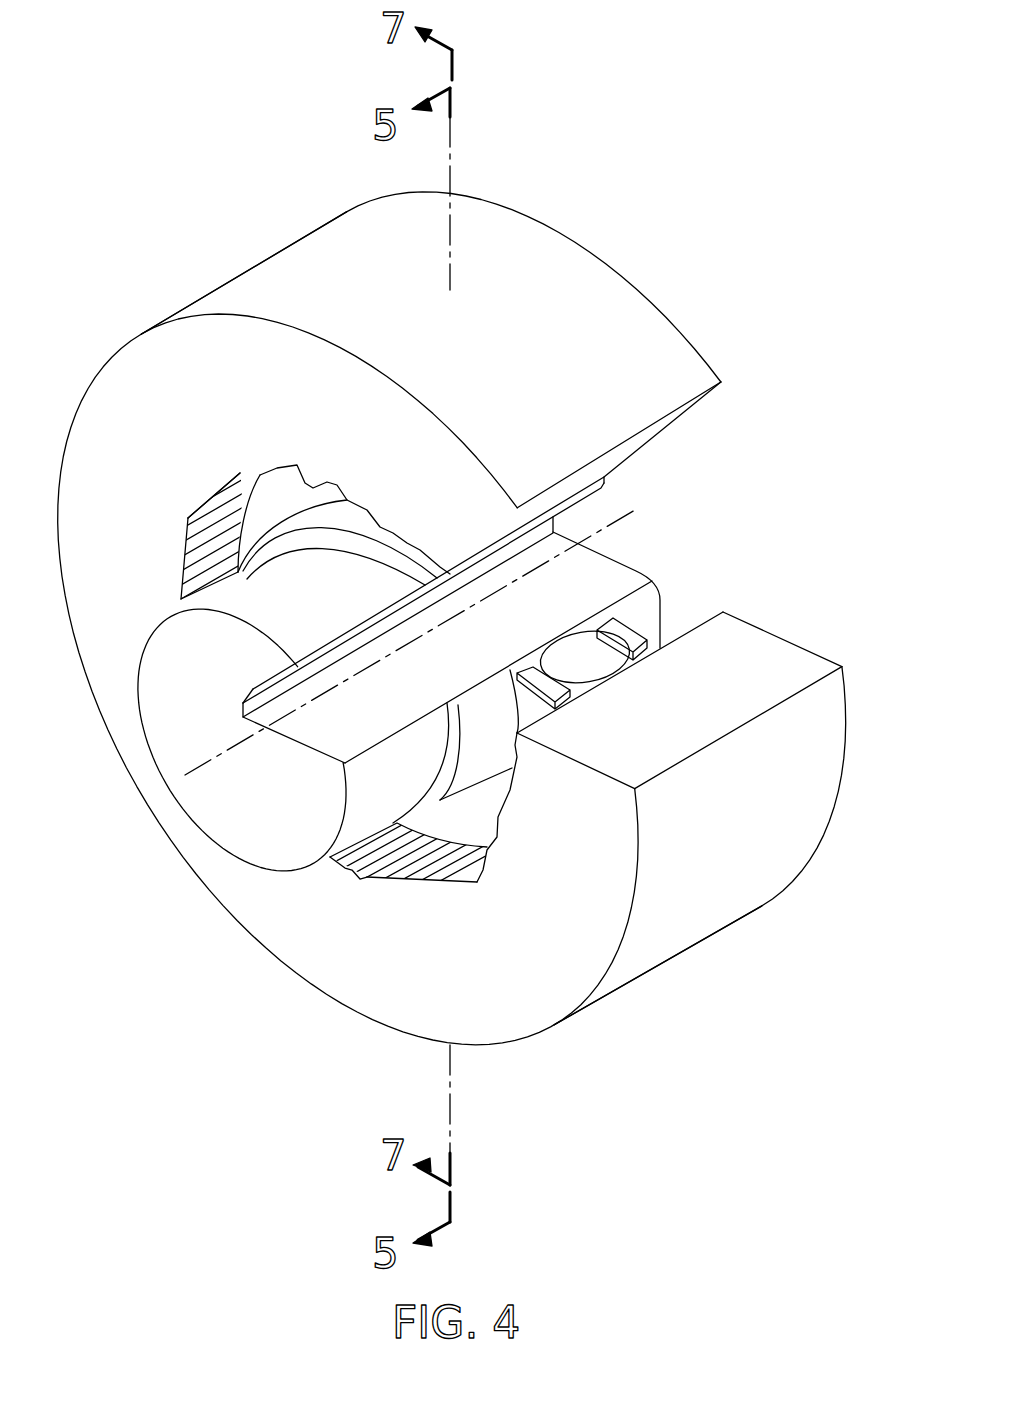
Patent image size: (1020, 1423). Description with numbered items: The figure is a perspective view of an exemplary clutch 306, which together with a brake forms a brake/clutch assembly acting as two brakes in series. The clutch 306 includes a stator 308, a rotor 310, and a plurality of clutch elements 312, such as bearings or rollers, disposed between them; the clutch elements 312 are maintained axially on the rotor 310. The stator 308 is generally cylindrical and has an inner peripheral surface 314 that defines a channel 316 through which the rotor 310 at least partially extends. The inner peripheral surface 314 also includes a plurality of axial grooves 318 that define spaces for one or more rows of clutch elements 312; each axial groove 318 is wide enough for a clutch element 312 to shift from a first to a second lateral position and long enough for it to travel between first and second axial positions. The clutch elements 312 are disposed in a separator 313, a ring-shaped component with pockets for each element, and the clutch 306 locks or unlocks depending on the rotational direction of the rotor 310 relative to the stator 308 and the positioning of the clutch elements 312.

The clutch 306 is at (782, 168).
The stator 308 is at (564, 244).
The rotor 310 is at (185, 788).
The clutch elements 312 is at (537, 513).
The separator 313 is at (628, 627).
The inner peripheral surface 314 is at (193, 528).
The channel 316 is at (215, 555).
The axial grooves 318 is at (212, 492).